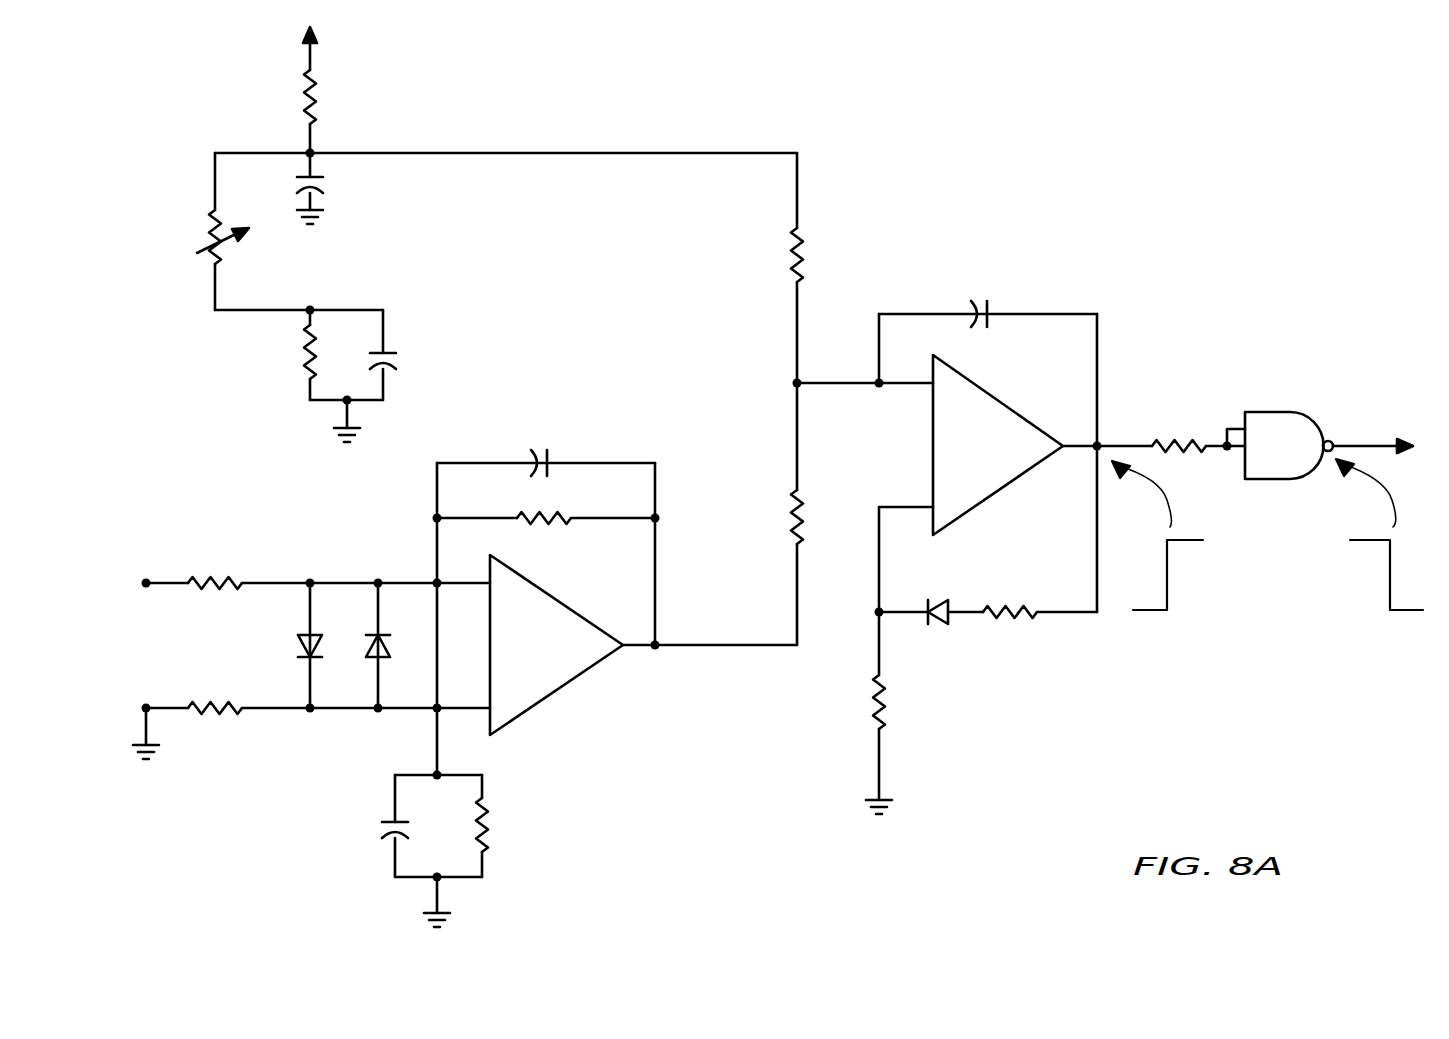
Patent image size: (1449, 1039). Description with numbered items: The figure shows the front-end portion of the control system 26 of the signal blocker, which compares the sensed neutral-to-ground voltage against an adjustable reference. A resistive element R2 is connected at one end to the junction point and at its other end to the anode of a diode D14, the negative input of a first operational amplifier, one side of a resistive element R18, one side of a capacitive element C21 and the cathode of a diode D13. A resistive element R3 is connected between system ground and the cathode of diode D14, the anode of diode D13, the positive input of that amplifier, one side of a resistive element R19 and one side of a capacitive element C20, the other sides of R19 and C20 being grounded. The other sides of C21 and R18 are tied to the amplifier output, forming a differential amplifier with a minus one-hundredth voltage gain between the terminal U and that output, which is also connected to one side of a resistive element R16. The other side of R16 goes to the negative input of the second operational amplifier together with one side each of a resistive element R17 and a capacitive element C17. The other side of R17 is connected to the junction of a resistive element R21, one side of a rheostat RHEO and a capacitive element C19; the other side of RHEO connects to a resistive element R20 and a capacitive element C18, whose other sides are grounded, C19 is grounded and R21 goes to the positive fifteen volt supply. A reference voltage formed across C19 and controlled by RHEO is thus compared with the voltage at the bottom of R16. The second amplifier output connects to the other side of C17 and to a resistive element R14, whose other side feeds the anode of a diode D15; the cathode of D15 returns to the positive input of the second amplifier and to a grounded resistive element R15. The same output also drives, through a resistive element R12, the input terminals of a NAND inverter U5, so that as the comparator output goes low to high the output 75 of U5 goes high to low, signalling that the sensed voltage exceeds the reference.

The control system 26 is at (789, 477).
The output signal 75 is at (1389, 447).
The terminal U is at (146, 578).
The resistive element R21 is at (318, 100).
The capacitive element C19 is at (323, 185).
The rheostat RHEO is at (209, 238).
The resistive element R20 is at (300, 351).
The capacitive element C18 is at (388, 357).
The resistive element R2 is at (221, 577).
The resistive element R3 is at (221, 704).
The diode D14 is at (300, 651).
The diode D13 is at (418, 644).
The capacitive element C21 is at (537, 450).
The resistive element R18 is at (547, 527).
The capacitive element C20 is at (384, 830).
The resistive element R19 is at (490, 815).
The resistive element R17 is at (790, 253).
The resistive element R16 is at (790, 515).
The capacitive element C17 is at (977, 306).
The diode D15 is at (932, 599).
The resistive element R14 is at (1010, 604).
The resistive element R15 is at (895, 719).
The resistive element R12 is at (1181, 434).
The NAND inverter U5 is at (1289, 445).